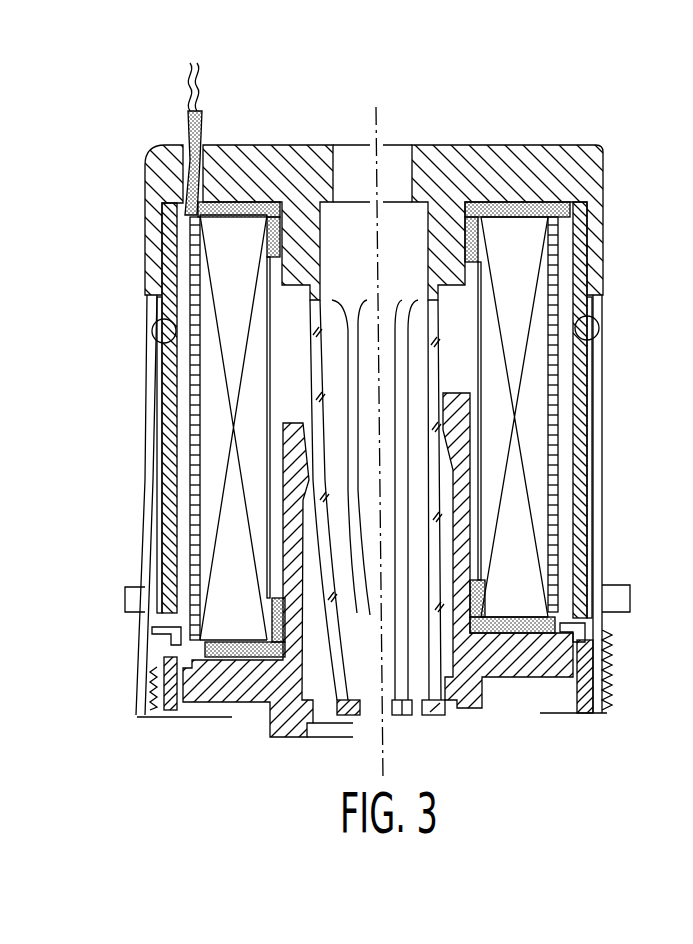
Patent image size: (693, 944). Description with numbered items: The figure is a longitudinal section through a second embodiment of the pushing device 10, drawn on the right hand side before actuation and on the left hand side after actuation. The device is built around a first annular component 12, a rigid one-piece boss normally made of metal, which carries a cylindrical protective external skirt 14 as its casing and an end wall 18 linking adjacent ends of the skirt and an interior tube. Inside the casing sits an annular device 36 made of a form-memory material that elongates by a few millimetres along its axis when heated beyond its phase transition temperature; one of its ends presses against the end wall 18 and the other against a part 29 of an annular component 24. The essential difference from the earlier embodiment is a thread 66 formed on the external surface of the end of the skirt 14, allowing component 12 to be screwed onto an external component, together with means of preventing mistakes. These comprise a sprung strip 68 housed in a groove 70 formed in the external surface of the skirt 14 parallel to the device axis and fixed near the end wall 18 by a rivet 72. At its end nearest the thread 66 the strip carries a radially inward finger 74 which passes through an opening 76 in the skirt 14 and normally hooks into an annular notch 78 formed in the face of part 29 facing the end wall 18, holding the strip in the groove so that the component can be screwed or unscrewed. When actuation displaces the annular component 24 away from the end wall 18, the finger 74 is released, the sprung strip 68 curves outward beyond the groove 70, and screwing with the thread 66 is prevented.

The pushing device 10 is at (548, 130).
The first annular component 12 is at (130, 200).
The cylindrical protective external skirt 14 is at (165, 428).
The end wall 18 is at (470, 165).
The annular component 24 is at (253, 712).
The part 29 is at (527, 660).
The annular device 36 is at (540, 474).
The thread 66 is at (613, 690).
The sprung strip 68 is at (148, 538).
The groove 70 is at (160, 617).
The rivet 72 is at (158, 331).
The finger 74 is at (168, 638).
The opening 76 is at (605, 632).
The annular notch 78 is at (222, 702).